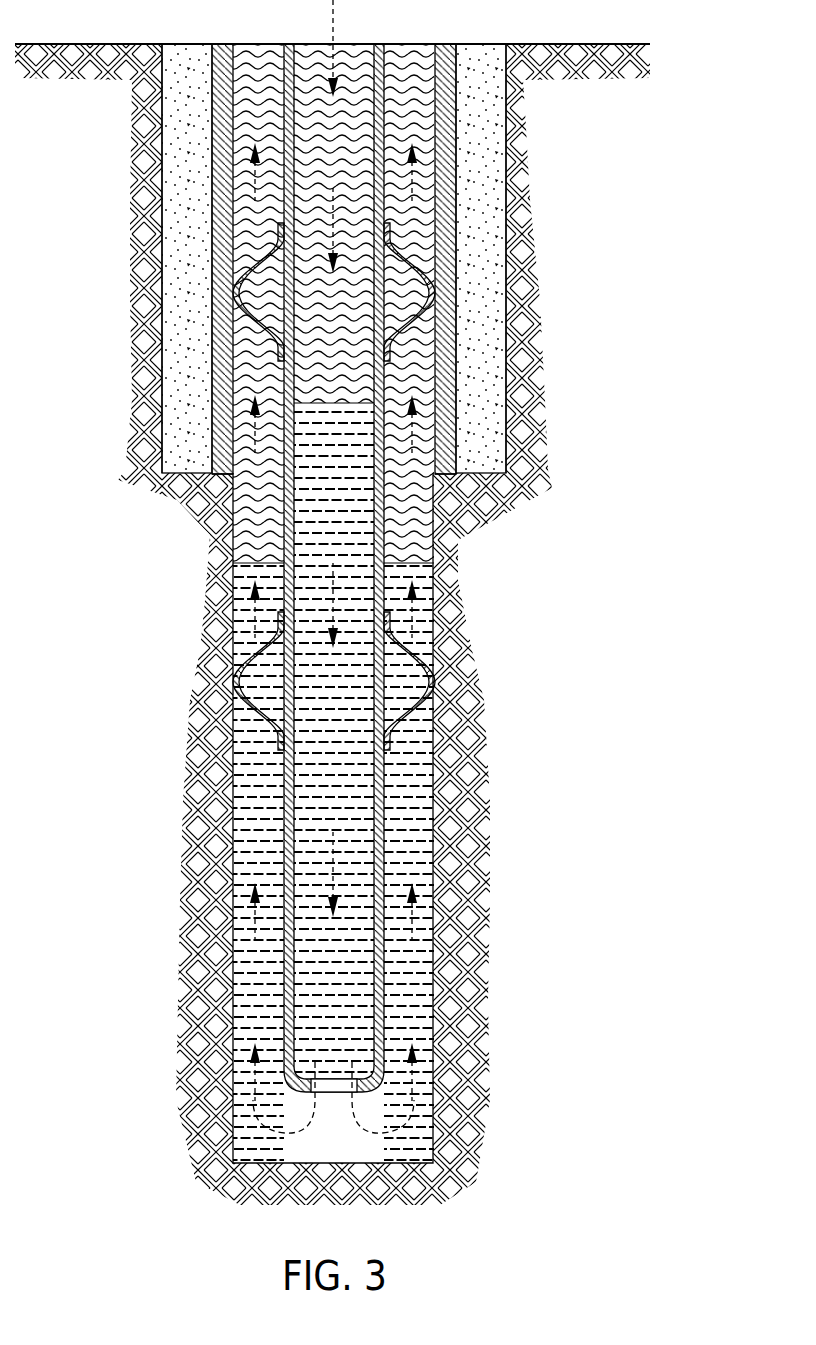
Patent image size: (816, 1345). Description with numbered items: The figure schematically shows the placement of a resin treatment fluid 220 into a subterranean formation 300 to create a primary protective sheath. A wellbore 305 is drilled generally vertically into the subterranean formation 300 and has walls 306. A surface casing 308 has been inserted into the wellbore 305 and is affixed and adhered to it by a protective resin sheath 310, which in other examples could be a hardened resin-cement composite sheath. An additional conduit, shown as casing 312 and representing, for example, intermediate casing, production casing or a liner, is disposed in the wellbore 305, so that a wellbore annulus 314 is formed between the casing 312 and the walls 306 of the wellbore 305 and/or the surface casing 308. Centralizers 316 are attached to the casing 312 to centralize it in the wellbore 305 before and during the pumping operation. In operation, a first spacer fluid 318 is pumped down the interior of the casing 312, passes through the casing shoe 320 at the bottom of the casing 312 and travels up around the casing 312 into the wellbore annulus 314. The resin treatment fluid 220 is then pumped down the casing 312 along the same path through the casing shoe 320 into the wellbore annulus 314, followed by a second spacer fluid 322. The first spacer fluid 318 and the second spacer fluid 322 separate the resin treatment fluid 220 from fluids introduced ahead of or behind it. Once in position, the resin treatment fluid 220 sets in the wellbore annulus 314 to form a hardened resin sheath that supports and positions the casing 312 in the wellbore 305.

The resin treatment fluid 220 is at (363, 866).
The subterranean formation 300 is at (184, 801).
The wellbore 305 is at (163, 170).
The walls 306 is at (437, 536).
The surface casing 308 is at (455, 168).
The protective resin sheath 310 is at (478, 243).
The casing 312 is at (383, 682).
The wellbore annulus 314 is at (253, 865).
The centralizers 316 is at (232, 250).
The first spacer fluid 318 is at (262, 472).
The casing shoe 320 is at (360, 1083).
The second spacer fluid 322 is at (319, 50).